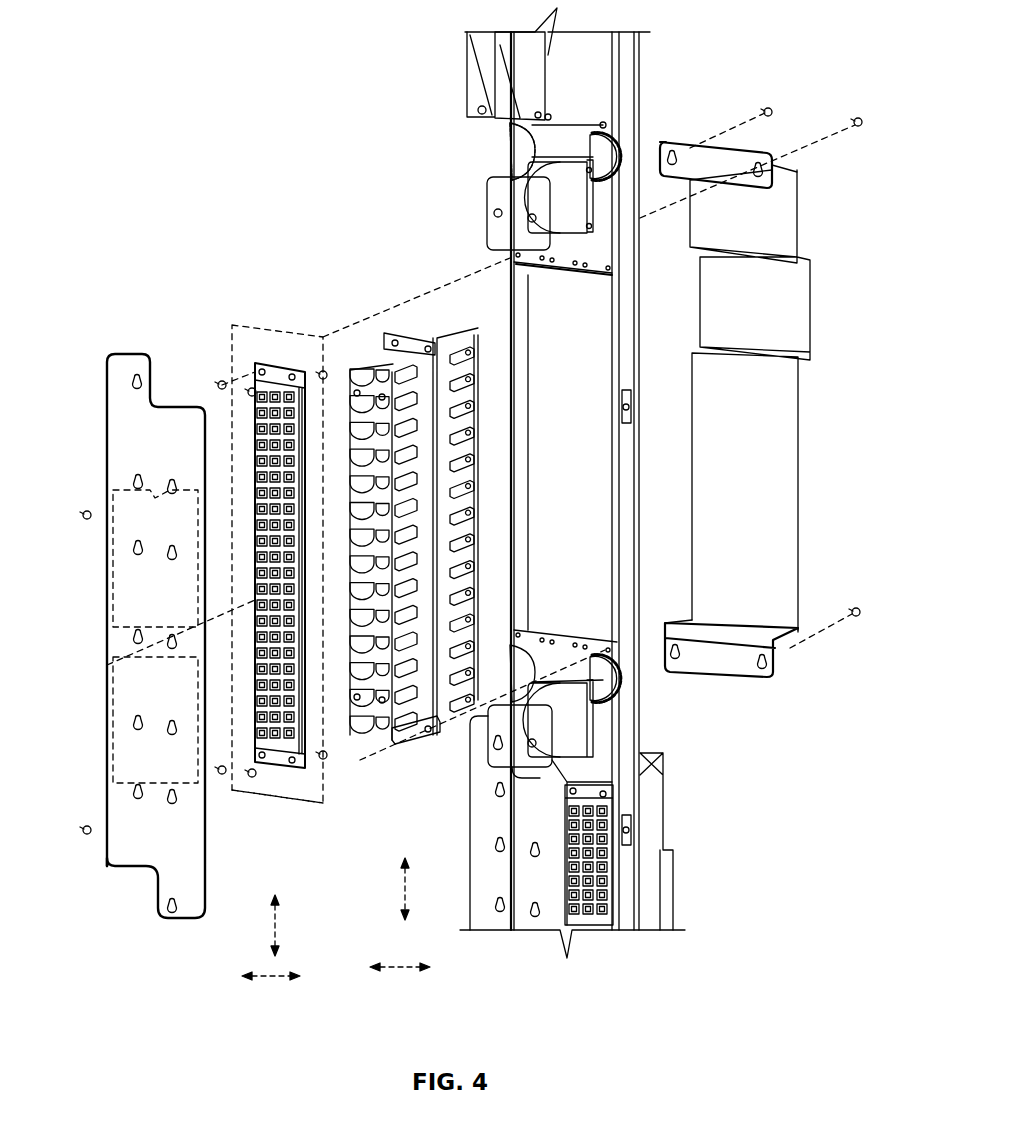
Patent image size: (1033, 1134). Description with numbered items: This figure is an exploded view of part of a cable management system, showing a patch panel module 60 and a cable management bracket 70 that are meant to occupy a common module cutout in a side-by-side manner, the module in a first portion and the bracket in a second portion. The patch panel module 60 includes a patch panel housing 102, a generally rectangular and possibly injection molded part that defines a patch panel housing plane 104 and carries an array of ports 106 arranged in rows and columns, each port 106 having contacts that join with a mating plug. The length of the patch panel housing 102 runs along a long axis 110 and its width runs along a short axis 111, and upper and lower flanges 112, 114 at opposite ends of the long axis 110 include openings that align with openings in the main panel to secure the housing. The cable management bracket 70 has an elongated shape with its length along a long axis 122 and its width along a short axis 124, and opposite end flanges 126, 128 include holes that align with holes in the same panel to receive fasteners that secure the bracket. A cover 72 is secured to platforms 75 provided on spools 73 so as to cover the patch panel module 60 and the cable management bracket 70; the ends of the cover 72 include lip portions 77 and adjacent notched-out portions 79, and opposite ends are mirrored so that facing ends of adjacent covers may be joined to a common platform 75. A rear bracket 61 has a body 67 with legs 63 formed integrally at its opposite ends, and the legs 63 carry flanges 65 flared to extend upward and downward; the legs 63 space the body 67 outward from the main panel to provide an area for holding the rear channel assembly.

The patch panel module 60 is at (226, 322).
The rear bracket 61 is at (767, 402).
The legs 63 is at (790, 645).
The flanges 65 is at (740, 666).
The body 67 is at (795, 492).
The cable management bracket 70 is at (386, 260).
The cover 72 is at (135, 416).
The spools 73 is at (508, 148).
The platforms 75 is at (488, 212).
The lip portions 77 is at (118, 366).
The notched-out portions 79 is at (162, 365).
The patch panel housing 102 is at (251, 563).
The patch panel housing plane 104 is at (268, 803).
The ports 106 is at (262, 370).
The long axis 110 is at (282, 923).
The short axis 111 is at (268, 978).
The upper flange 112 is at (288, 370).
The lower flange 114 is at (280, 762).
The long axis 122 is at (400, 888).
The short axis 124 is at (400, 970).
The end flange 126 is at (415, 345).
The end flange 128 is at (430, 740).